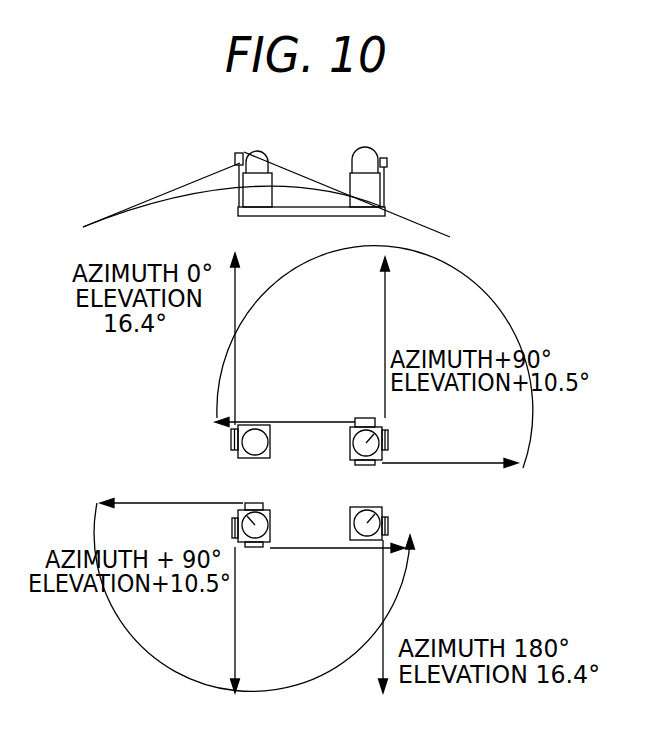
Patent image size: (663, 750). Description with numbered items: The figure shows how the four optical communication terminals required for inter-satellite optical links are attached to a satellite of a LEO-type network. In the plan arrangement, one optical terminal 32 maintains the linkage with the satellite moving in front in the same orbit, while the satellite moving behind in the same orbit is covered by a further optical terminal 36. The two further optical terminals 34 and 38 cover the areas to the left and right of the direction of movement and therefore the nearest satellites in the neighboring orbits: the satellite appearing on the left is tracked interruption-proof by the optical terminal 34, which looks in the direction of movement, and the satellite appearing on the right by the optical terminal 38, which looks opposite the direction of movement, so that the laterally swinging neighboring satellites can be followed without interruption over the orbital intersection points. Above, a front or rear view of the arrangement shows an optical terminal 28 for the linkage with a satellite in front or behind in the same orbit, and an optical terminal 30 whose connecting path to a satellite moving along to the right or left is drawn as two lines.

The optical terminal 28 is at (367, 157).
The optical terminal 30 is at (256, 150).
The optical terminal 32 is at (250, 441).
The optical terminal 34 is at (388, 436).
The optical terminal 36 is at (370, 522).
The optical terminal 38 is at (245, 505).